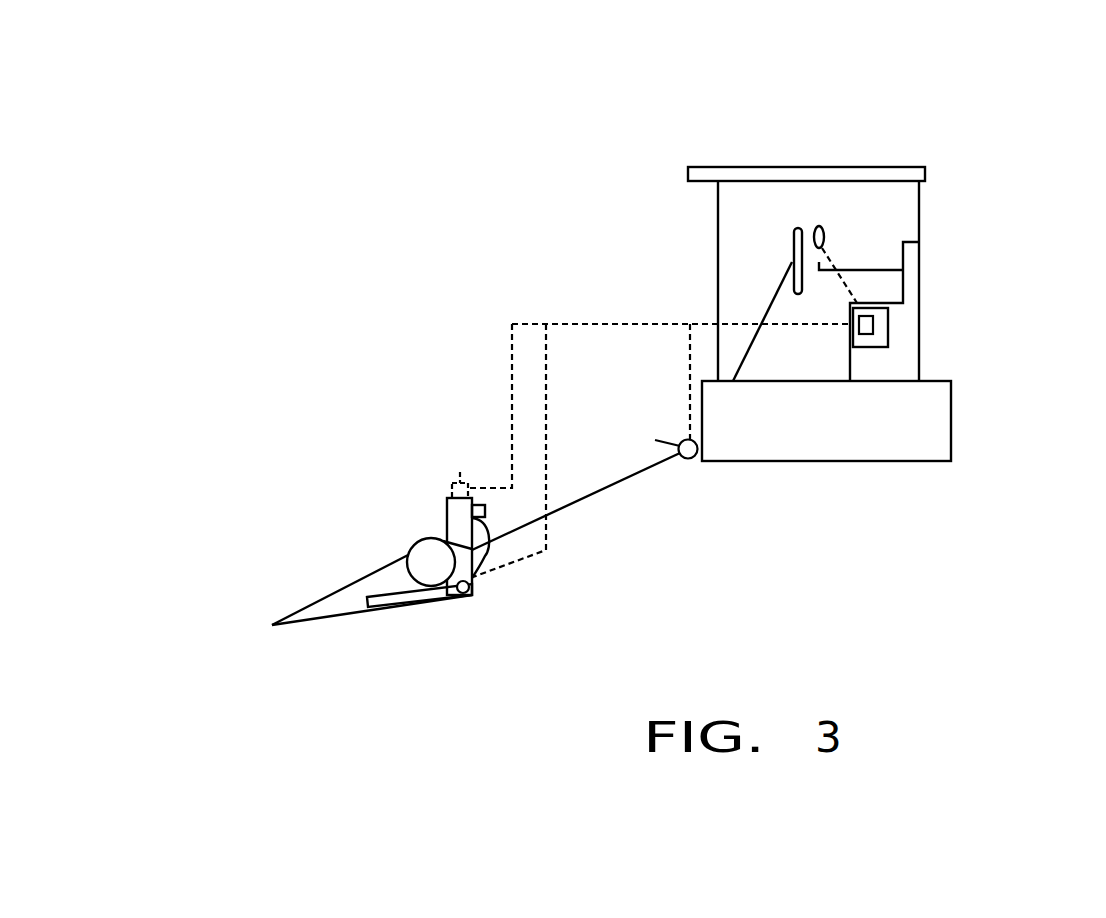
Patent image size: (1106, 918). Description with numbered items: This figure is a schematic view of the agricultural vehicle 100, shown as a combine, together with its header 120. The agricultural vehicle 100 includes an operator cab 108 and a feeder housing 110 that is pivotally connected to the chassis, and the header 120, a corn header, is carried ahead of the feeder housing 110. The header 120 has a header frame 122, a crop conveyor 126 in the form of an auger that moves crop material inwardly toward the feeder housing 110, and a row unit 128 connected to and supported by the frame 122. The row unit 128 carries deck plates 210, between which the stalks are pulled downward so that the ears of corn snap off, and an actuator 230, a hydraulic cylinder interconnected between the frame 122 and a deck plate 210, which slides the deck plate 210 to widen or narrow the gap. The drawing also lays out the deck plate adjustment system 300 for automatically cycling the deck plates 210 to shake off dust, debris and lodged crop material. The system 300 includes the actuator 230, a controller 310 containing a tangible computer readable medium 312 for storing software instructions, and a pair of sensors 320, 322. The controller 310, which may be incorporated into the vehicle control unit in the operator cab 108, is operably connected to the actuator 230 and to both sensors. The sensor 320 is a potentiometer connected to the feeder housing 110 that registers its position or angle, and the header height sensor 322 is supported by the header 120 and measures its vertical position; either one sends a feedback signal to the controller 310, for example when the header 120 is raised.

The agricultural vehicle 100 is at (909, 150).
The operator cab 108 is at (718, 240).
The feeder housing 110 is at (595, 495).
The header 120 is at (279, 536).
The header frame 122 is at (473, 580).
The crop conveyor 126 is at (407, 534).
The row unit 128 is at (262, 607).
The deck plate 210 is at (420, 607).
The actuator 230 is at (467, 591).
The deck plate adjustment system 300 is at (955, 300).
The controller 310 is at (888, 342).
The tangible computer readable medium 312 is at (873, 330).
The sensor 320 is at (693, 459).
The header height sensor 322 is at (461, 472).